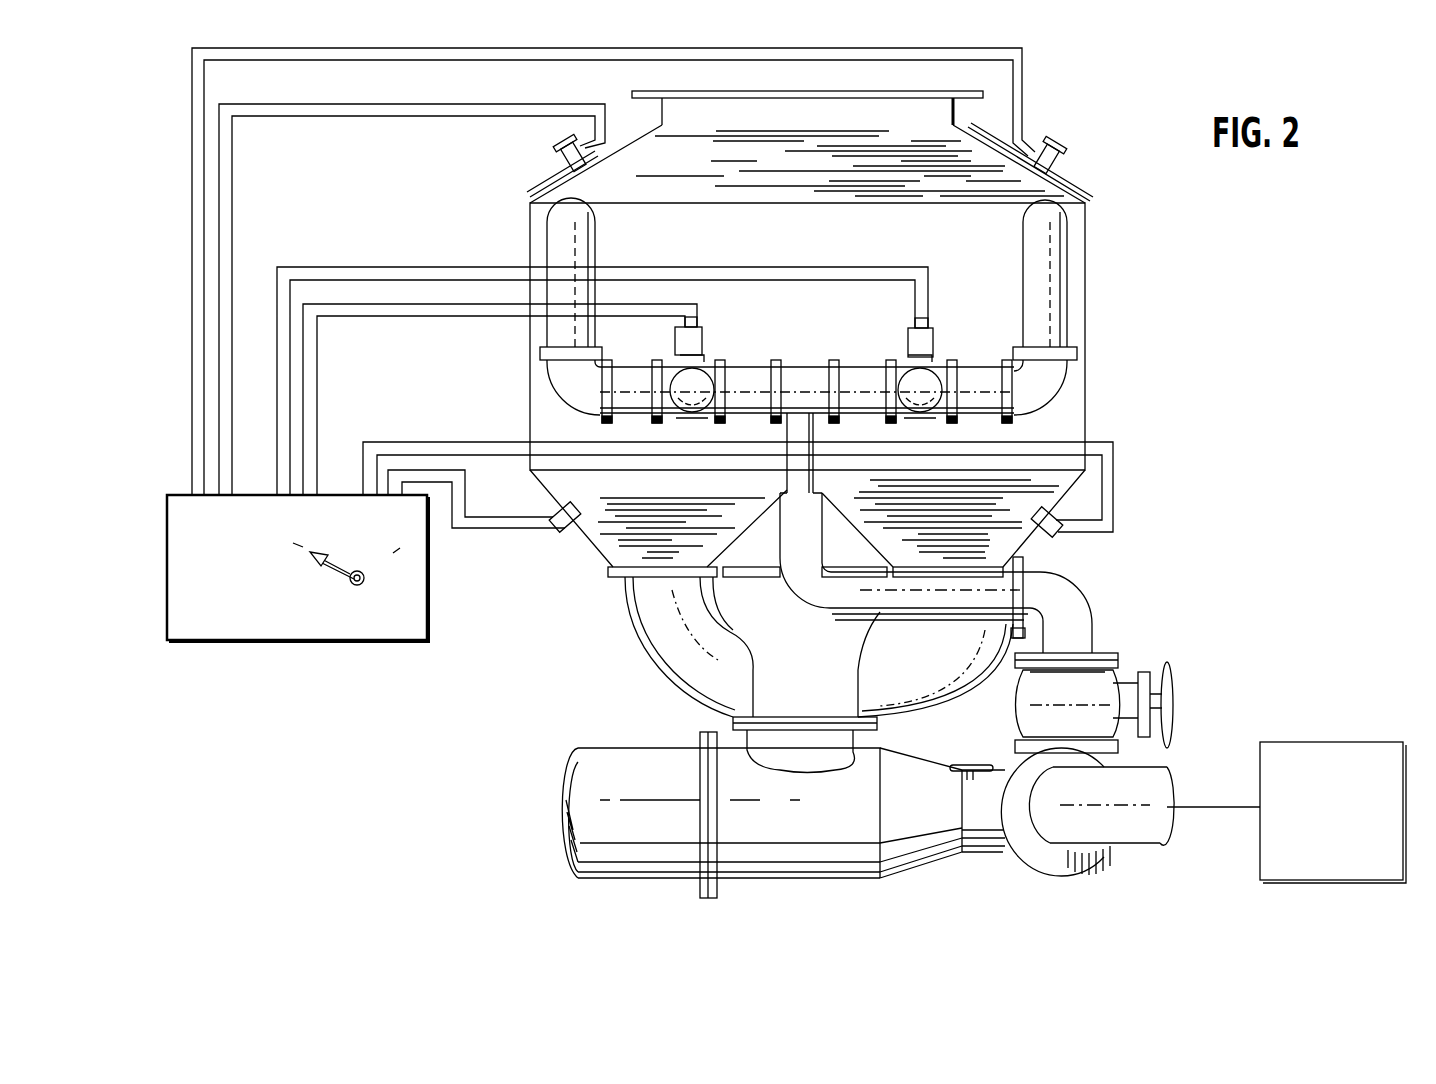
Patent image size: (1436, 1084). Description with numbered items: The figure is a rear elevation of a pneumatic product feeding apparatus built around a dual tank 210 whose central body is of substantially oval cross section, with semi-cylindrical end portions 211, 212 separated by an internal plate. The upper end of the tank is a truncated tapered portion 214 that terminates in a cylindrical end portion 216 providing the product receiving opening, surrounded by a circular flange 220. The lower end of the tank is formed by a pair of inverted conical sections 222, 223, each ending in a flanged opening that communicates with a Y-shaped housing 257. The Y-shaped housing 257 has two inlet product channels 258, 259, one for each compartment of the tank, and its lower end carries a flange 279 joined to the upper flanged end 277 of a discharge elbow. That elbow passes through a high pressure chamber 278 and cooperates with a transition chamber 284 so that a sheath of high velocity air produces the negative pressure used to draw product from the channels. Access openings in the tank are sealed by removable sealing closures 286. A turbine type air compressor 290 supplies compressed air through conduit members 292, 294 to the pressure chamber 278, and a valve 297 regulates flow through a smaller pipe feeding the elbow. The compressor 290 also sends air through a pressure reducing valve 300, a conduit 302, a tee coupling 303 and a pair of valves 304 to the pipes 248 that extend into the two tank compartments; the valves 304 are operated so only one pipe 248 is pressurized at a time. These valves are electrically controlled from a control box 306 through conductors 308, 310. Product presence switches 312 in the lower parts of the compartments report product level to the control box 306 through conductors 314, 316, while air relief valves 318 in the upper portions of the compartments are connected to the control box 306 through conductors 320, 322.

The dual tank 210 is at (827, 324).
The semi-cylindrical end portion 211 is at (1088, 254).
The semi-cylindrical end portion 212 is at (535, 230).
The truncated tapered portion 214 is at (1025, 183).
The cylindrical end portion 216 is at (953, 119).
The circular flange 220 is at (632, 93).
The inverted conical section 222 is at (600, 538).
The inverted conical section 223 is at (1015, 540).
The pipe 248 is at (572, 245).
The Y-shaped housing 257 is at (632, 644).
The inlet product channel 258 is at (682, 653).
The inlet product channel 259 is at (930, 663).
The upper flanged end 277 is at (877, 723).
The high pressure chamber 278 is at (815, 862).
The flange 279 is at (730, 712).
The transition chamber 284 is at (565, 872).
The removable sealing closure 286 is at (548, 190).
The air compressor 290 is at (1332, 742).
The conduit member 292 is at (1128, 845).
The conduit member 294 is at (985, 852).
The valve 297 is at (974, 766).
The pressure reducing valve 300 is at (1122, 688).
The conduit 302 is at (1080, 610).
The tee coupling 303 is at (810, 372).
The valve 304 is at (695, 420).
The control box 306 is at (305, 625).
The conductor 308 is at (700, 315).
The conductor 310 is at (935, 300).
The switch 312 is at (565, 510).
The conductor 314 is at (1113, 486).
The conductor 316 is at (517, 528).
The air relief valve 318 is at (560, 148).
The conductor 320 is at (437, 104).
The conductor 322 is at (1022, 92).